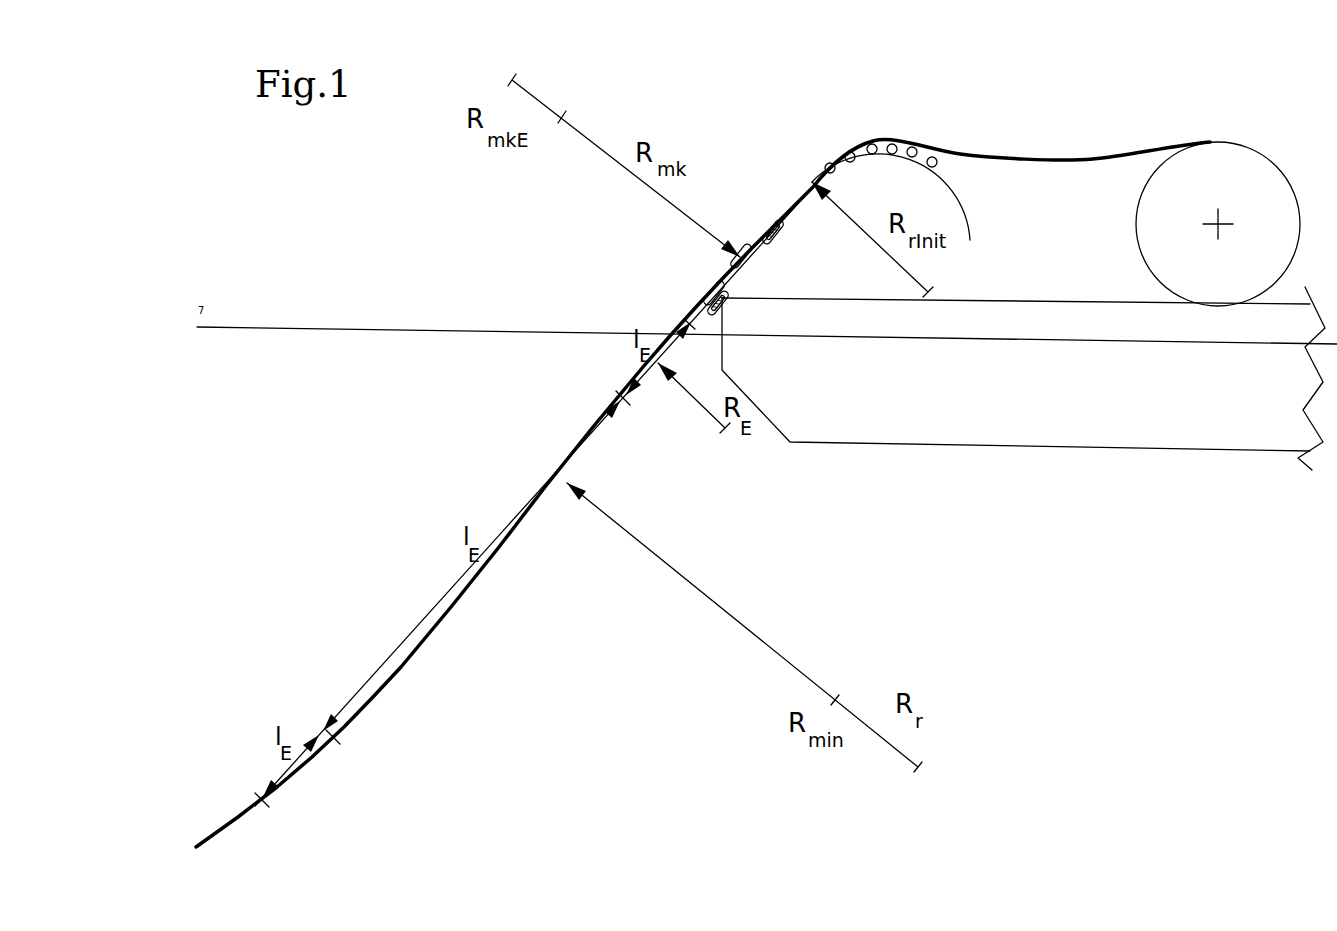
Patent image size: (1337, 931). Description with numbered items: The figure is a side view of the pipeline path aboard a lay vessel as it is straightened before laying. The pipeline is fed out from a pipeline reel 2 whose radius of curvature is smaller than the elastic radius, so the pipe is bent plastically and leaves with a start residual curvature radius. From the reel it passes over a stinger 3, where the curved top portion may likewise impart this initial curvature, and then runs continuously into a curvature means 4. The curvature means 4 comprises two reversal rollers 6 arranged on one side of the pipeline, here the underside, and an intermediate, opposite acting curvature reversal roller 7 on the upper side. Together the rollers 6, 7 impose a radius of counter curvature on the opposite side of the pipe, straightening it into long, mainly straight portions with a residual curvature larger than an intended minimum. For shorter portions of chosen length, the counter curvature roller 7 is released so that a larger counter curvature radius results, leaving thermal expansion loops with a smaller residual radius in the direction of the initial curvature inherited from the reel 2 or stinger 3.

The pipeline reel 2 is at (1238, 143).
The stinger 3 is at (860, 162).
The curvature means 4 is at (735, 207).
The reversal rollers 6 is at (773, 237).
The curvature reversal roller 7 is at (728, 265).